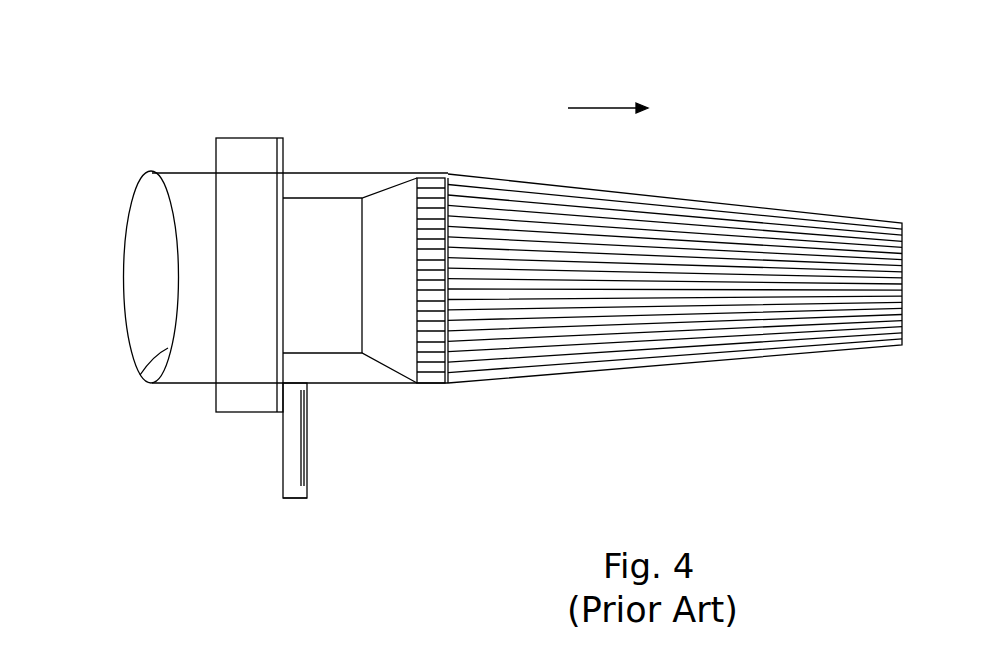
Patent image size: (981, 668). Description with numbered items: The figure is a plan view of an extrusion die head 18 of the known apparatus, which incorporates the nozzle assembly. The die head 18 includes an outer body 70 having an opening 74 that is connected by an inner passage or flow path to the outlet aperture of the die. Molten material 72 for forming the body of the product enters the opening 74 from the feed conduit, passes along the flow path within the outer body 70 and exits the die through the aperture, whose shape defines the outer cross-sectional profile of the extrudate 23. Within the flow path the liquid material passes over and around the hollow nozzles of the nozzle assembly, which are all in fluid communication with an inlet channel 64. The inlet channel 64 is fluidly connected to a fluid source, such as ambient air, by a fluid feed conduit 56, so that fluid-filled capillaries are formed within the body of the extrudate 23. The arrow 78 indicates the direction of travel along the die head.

The die head 18 is at (326, 172).
The extrudate 23 is at (758, 330).
The fluid feed conduit 56 is at (295, 500).
The inlet channel 64 is at (310, 388).
The outer body 70 is at (405, 385).
The molten material 72 is at (145, 240).
The opening 74 is at (142, 372).
The direction arrow 78 is at (605, 107).